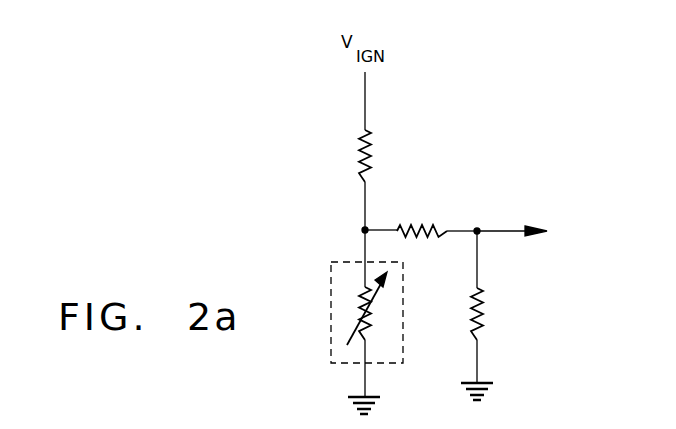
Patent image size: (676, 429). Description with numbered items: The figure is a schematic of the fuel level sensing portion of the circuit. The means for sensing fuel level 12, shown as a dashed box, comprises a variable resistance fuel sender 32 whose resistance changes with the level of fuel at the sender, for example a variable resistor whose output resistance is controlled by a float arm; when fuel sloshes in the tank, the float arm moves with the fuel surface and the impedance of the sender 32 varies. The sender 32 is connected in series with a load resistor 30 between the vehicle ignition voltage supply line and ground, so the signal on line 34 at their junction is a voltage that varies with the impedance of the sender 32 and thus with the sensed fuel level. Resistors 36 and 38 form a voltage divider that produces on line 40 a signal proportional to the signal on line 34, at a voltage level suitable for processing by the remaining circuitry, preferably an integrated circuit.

The means for sensing fuel level 12 is at (331, 263).
The load resistor 30 is at (363, 147).
The variable resistance fuel sender 32 is at (367, 307).
The line 34 is at (364, 229).
The resistor 36 is at (419, 226).
The resistor 38 is at (482, 308).
The line 40 is at (500, 230).